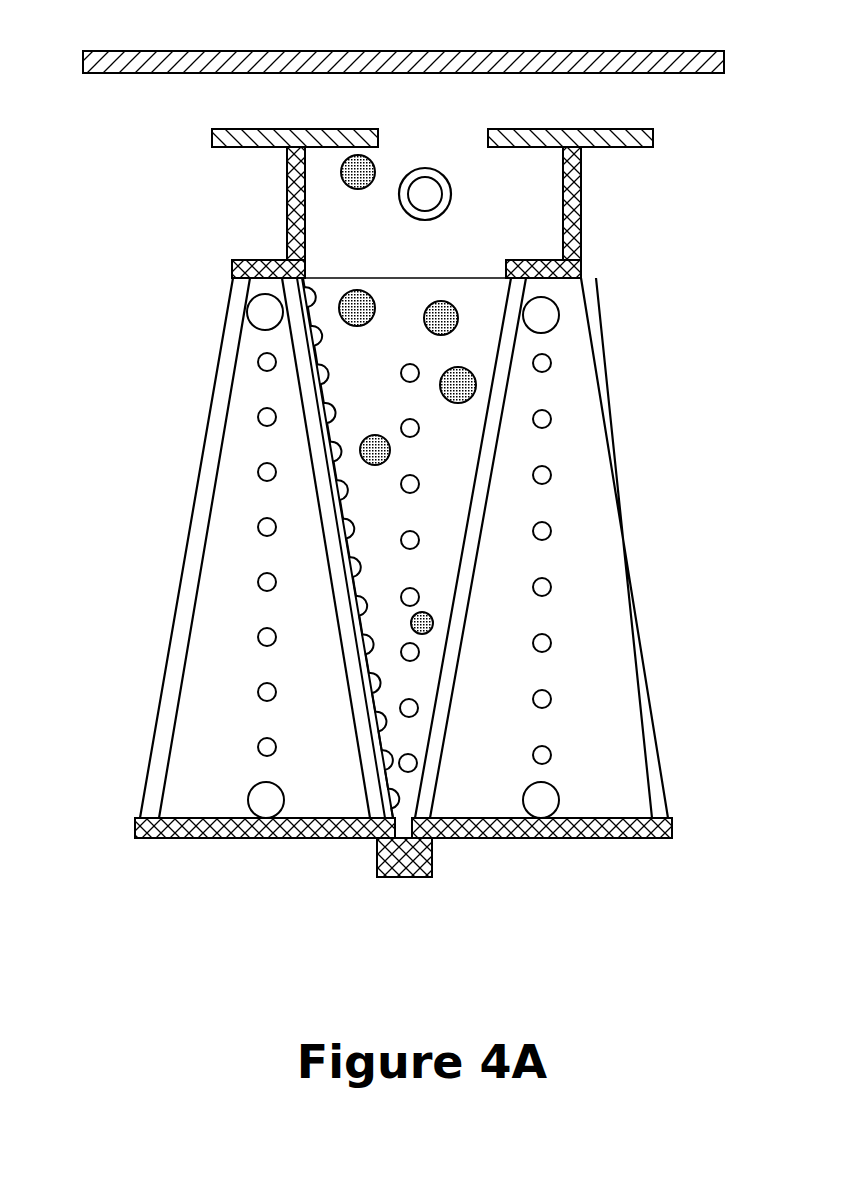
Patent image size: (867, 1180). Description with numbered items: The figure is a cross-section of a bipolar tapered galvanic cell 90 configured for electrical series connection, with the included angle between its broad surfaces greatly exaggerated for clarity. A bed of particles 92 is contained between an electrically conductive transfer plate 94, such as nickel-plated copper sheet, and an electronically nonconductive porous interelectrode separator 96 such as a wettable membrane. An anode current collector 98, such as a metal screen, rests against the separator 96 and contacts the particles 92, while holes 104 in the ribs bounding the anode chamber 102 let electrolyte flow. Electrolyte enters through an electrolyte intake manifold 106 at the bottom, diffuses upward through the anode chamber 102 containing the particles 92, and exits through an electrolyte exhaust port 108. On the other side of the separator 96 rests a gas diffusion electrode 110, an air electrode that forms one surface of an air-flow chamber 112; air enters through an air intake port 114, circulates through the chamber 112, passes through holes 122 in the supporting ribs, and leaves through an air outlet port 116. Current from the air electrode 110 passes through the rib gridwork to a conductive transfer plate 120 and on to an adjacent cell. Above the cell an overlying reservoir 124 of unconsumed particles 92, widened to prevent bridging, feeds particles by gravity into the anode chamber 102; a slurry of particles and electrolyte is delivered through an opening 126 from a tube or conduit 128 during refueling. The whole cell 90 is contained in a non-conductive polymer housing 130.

The galvanic cell 90 is at (136, 318).
The particles 92 is at (441, 316).
The electrically conductive transfer plate 94 is at (487, 442).
The porous interelectrode separator 96 is at (330, 437).
The anode current collector 98 is at (342, 372).
The anode chamber 102 is at (430, 565).
The holes 104 is at (410, 484).
The electrolyte intake manifold 106 is at (406, 850).
The electrolyte exhaust port 108 is at (425, 194).
The gas diffusion electrode 110 is at (305, 383).
The air-flow chamber 112 is at (222, 697).
The air intake port 114 is at (262, 312).
The air outlet port 116 is at (263, 803).
The conductive transfer plate 120 is at (160, 748).
The holes 122 is at (265, 585).
The reservoir 124 is at (369, 230).
The opening 126 is at (425, 135).
The tube or conduit 128 is at (266, 112).
The non-conductive housing 130 is at (572, 218).